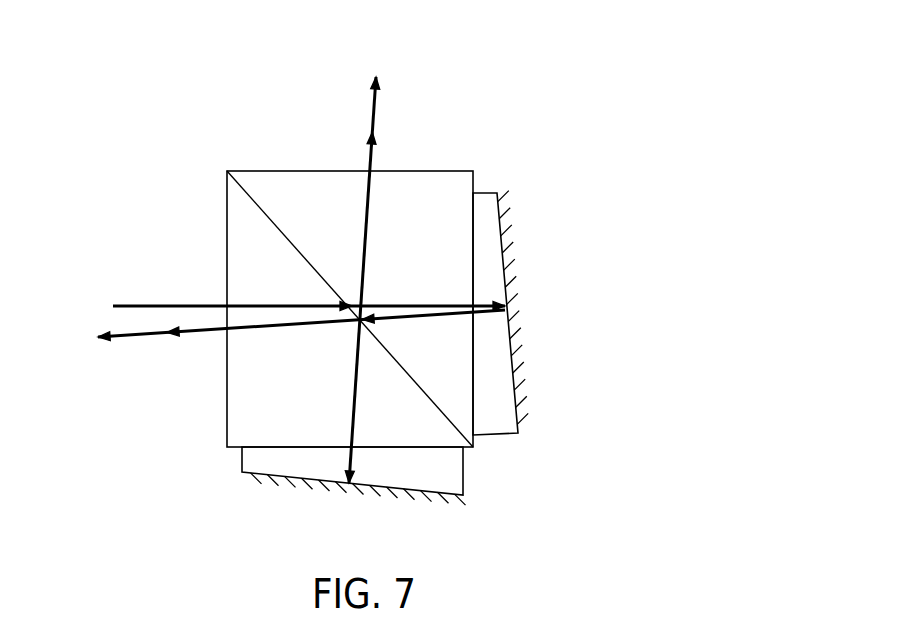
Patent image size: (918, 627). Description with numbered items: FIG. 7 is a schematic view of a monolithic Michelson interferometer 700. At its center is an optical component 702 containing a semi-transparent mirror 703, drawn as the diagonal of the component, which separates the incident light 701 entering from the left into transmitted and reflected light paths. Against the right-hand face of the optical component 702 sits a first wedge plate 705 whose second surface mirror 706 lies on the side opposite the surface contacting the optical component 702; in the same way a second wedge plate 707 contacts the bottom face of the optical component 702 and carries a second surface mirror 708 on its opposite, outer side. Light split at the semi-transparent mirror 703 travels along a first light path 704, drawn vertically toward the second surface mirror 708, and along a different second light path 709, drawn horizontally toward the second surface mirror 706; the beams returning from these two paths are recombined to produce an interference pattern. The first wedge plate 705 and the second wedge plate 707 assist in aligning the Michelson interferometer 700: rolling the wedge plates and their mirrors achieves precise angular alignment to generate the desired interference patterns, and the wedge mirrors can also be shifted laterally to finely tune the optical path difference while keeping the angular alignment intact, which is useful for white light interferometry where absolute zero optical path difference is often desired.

The monolithic Michelson interferometer 700 is at (616, 59).
The incident light beam 701 is at (295, 269).
The optical component 702 is at (348, 269).
The semi-transparent mirror 703 is at (350, 309).
The first light path 704 is at (390, 255).
The first wedge plate 705 is at (514, 278).
The second surface mirror 706 is at (535, 308).
The second wedge plate 707 is at (391, 487).
The second surface mirror 708 is at (353, 515).
The second light path 709 is at (301, 368).